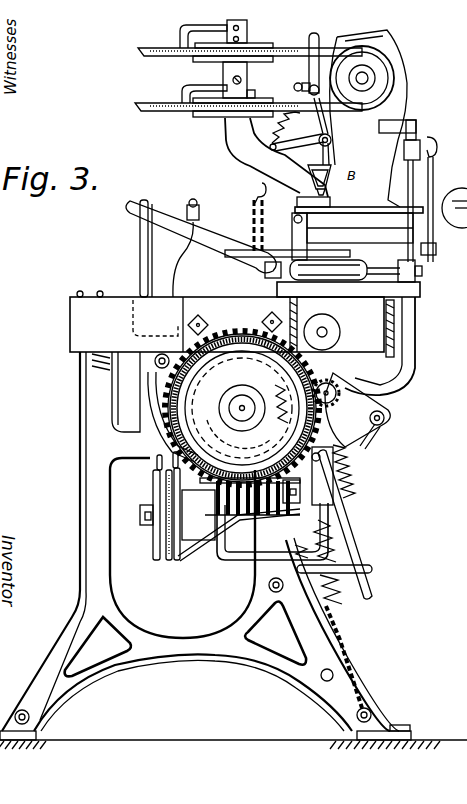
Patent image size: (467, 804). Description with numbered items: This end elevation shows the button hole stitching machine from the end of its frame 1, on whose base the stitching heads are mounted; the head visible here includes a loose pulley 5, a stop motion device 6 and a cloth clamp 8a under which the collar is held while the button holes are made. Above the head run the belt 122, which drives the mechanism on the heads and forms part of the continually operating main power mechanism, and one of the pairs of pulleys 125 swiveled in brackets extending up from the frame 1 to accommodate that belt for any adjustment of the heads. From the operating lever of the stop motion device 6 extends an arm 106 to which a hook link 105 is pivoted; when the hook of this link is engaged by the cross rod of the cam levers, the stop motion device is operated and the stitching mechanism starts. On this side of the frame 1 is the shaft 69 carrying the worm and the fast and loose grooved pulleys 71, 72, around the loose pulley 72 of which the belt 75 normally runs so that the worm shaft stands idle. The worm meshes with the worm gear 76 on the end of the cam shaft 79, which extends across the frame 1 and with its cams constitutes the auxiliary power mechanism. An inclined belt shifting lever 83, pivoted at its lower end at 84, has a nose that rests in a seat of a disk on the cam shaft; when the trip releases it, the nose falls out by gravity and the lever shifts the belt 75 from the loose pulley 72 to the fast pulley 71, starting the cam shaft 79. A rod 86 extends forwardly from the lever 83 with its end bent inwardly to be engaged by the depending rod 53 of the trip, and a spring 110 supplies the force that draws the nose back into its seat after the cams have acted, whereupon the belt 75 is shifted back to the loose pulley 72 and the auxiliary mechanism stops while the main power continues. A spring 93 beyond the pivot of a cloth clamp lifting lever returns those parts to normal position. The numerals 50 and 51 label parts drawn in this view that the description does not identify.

The frame 1 is at (210, 511).
The pair of pulleys 125 is at (254, 45).
The belt 122 is at (160, 109).
The loose pulley 5 is at (382, 68).
The stop motion device 6 is at (291, 142).
The cloth clamp 8a is at (321, 174).
The arm 106 is at (187, 203).
The hook link 105 is at (150, 272).
The loose pulley 72 is at (324, 330).
The curved arm 50 is at (411, 348).
The cam shaft 79 is at (242, 392).
The worm gear 76 is at (232, 433).
The pinion 51 is at (333, 392).
The spring 93 is at (355, 474).
The shaft 69 is at (147, 525).
The fast pulley 71 is at (167, 547).
The belt 75 is at (188, 557).
The belt shifting lever 83 is at (252, 537).
The rod 53 is at (354, 518).
The rod 86 is at (348, 567).
The spring 110 is at (335, 596).
The pivot 84 is at (364, 690).